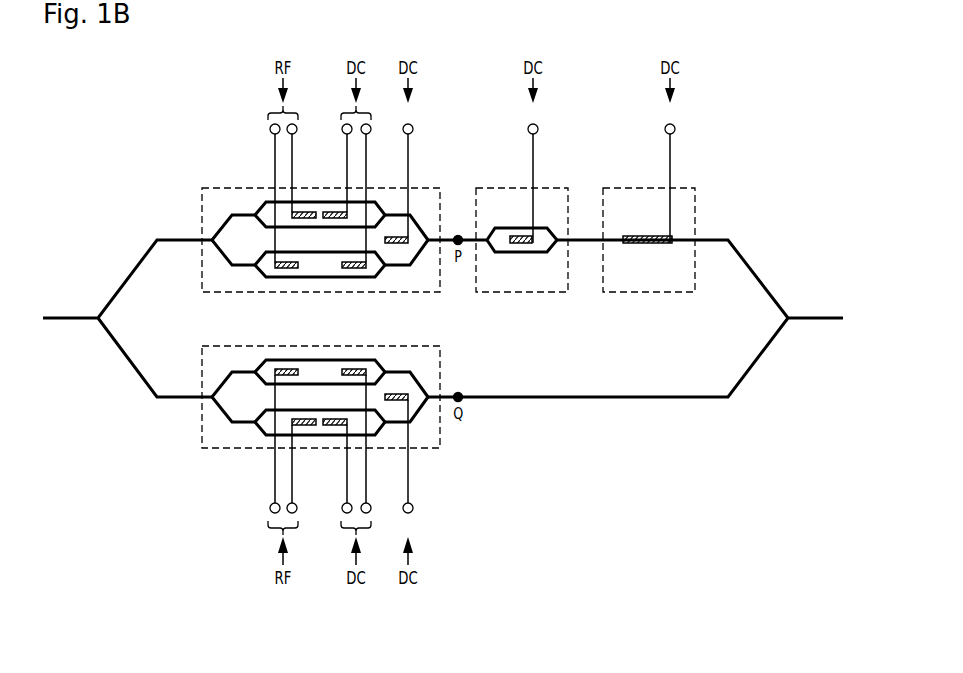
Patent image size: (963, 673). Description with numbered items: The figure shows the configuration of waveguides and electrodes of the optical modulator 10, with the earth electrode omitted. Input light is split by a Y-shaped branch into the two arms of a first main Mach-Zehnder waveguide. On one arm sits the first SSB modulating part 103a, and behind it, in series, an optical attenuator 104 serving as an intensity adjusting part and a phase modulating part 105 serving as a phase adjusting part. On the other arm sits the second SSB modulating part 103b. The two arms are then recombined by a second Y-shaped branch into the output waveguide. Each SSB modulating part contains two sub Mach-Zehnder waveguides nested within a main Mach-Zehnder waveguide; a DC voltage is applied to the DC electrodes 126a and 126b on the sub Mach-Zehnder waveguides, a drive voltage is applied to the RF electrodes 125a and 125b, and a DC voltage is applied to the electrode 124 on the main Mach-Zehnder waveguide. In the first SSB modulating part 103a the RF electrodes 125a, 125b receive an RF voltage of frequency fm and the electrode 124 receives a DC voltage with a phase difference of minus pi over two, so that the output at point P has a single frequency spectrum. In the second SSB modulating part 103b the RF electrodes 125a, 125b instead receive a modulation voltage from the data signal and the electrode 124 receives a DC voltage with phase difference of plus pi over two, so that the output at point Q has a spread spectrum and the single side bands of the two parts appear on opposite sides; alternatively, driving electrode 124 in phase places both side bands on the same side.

The optical modulator 10 is at (751, 193).
The first SSB modulating part 103a is at (218, 187).
The second SSB modulating part 103b is at (442, 363).
The optical attenuator 104 is at (502, 187).
The phase modulating part 105 is at (635, 187).
The electrode 124 is at (398, 243).
The RF electrode 125a is at (305, 218).
The RF electrode 125b is at (287, 268).
The DC electrode 126a is at (337, 211).
The DC electrode 126b is at (355, 268).